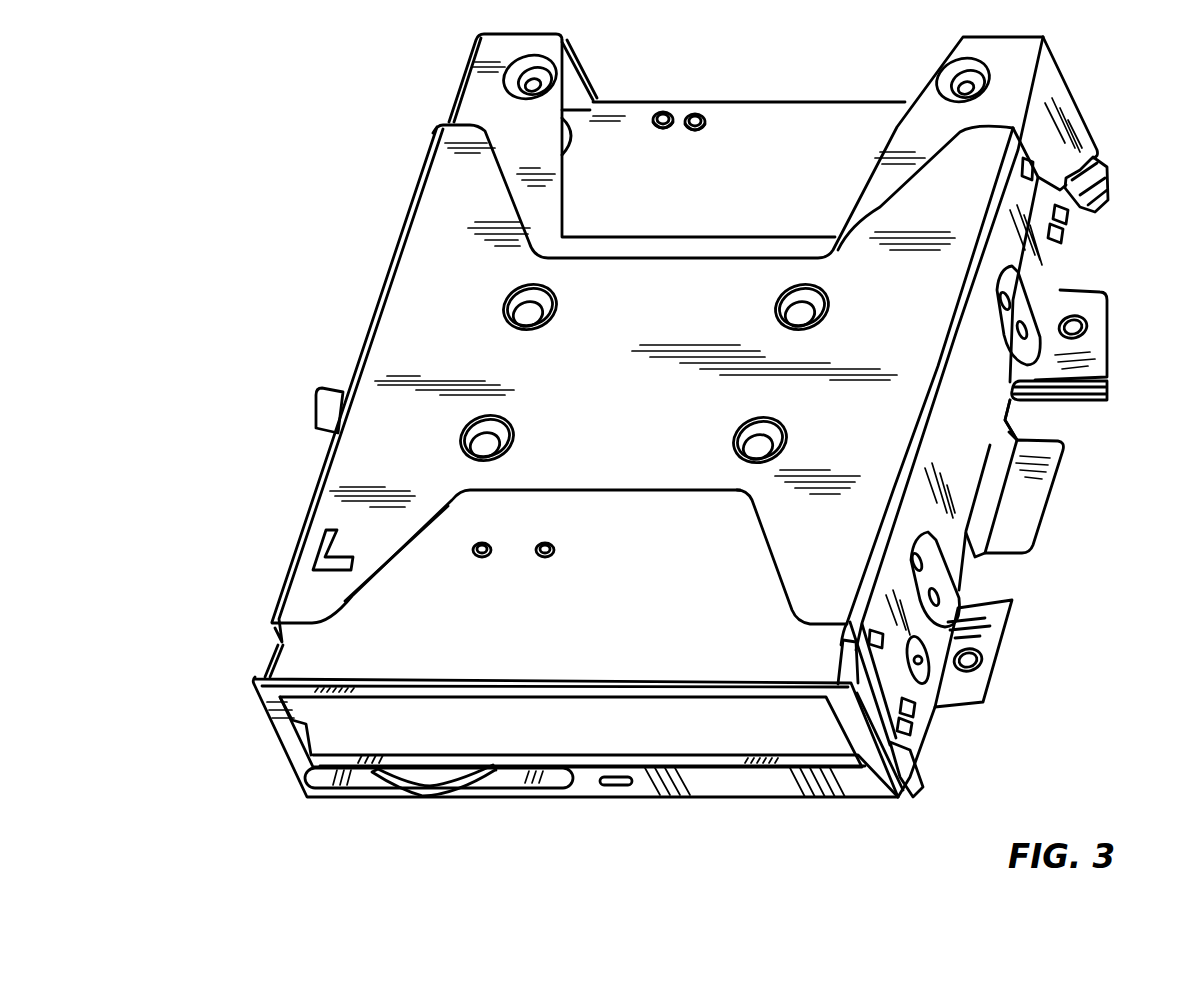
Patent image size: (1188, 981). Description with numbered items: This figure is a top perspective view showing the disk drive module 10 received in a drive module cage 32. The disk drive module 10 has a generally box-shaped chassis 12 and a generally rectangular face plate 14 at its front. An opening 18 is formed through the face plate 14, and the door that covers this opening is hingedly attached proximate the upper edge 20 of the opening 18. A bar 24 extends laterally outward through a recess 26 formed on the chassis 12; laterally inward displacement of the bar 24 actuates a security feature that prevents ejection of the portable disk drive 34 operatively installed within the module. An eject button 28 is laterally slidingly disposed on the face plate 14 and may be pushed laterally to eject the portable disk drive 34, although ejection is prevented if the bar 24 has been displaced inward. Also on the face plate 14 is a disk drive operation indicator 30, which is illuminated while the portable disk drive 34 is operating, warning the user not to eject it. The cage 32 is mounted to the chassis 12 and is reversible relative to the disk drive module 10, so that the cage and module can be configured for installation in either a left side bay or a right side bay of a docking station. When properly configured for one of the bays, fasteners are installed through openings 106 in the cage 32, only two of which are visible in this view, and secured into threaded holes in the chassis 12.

The disk drive module 10 is at (686, 417).
The chassis 12 is at (467, 72).
The face plate 14 is at (300, 783).
The opening 18 is at (290, 725).
The upper edge 20 is at (640, 708).
The bar 24 is at (1108, 386).
The recess 26 is at (1010, 418).
The eject button 28 is at (450, 788).
The disk drive operation indicator 30 is at (630, 782).
The cage 32 is at (1050, 503).
The portable disk drive 34 is at (818, 740).
The openings 106 is at (1053, 300).